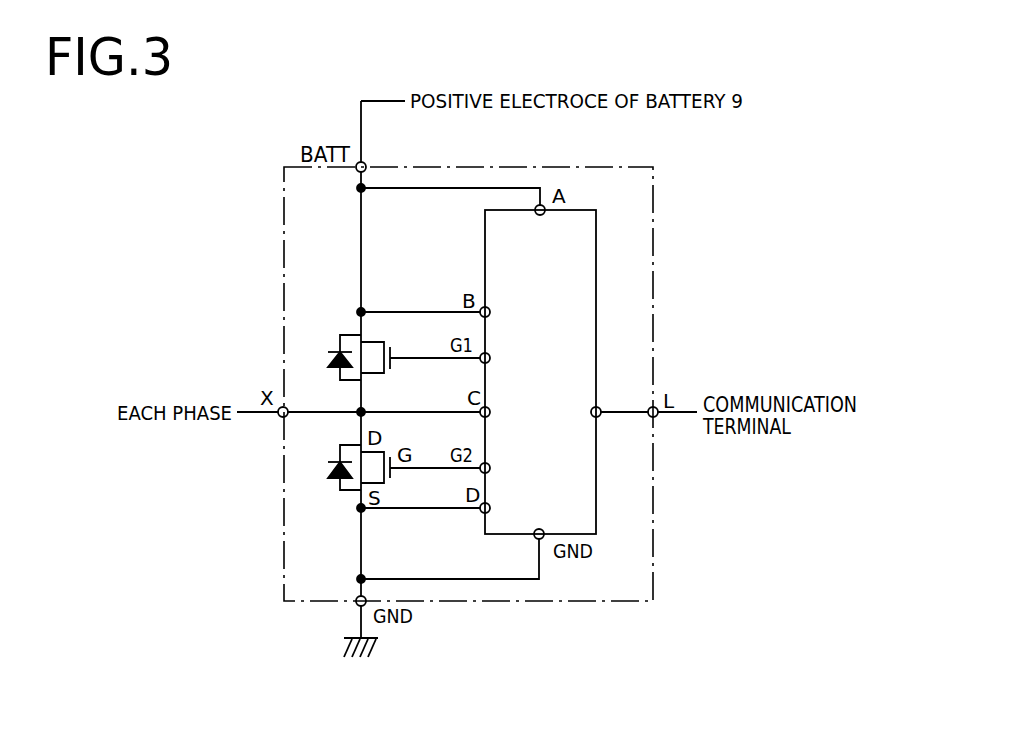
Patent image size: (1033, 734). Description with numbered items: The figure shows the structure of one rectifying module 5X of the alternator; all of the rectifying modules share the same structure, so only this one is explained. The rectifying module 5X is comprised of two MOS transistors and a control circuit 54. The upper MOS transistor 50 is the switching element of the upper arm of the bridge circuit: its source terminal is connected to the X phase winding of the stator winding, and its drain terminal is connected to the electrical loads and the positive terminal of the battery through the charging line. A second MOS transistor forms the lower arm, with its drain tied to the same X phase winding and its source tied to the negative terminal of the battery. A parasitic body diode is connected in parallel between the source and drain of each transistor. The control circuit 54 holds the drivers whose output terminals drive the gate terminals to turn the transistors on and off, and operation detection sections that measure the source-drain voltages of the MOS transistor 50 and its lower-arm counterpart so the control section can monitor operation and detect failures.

The rectifying module 5X is at (636, 167).
The control circuit 54 is at (580, 210).
The MOS transistor 50 is at (345, 335).